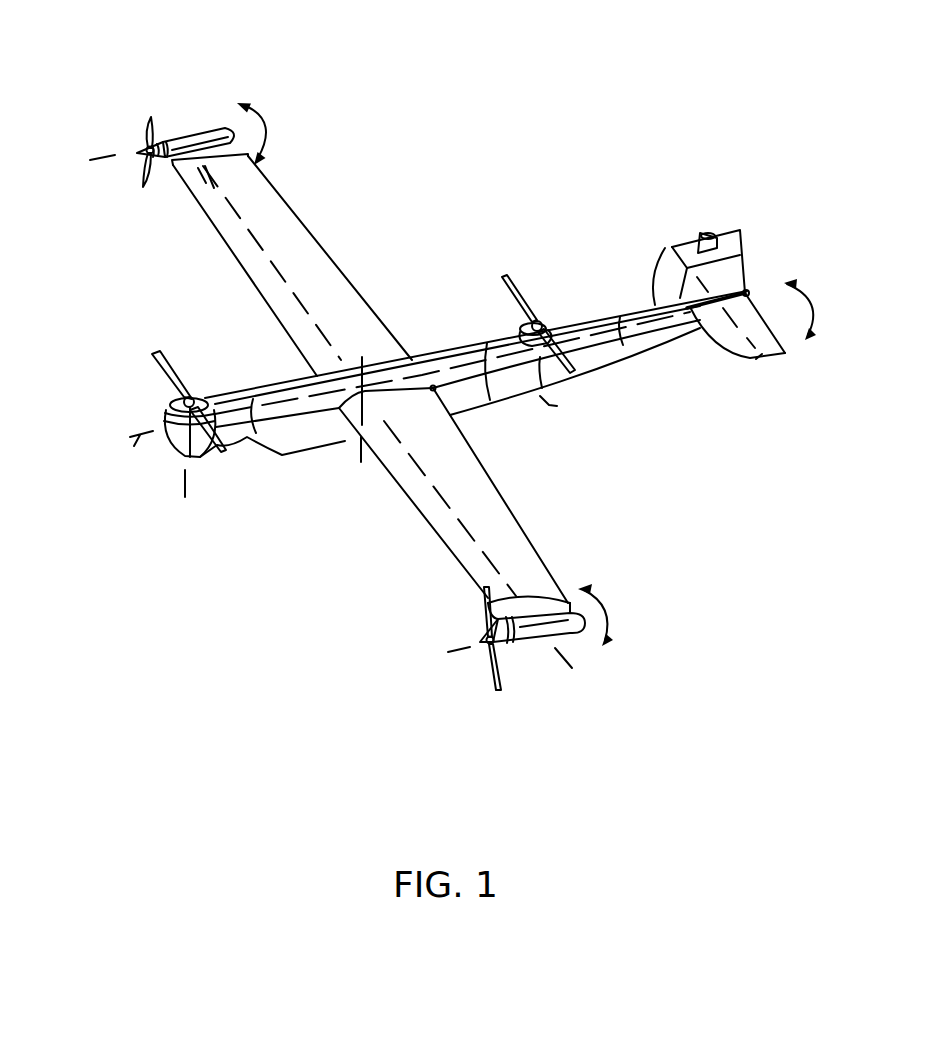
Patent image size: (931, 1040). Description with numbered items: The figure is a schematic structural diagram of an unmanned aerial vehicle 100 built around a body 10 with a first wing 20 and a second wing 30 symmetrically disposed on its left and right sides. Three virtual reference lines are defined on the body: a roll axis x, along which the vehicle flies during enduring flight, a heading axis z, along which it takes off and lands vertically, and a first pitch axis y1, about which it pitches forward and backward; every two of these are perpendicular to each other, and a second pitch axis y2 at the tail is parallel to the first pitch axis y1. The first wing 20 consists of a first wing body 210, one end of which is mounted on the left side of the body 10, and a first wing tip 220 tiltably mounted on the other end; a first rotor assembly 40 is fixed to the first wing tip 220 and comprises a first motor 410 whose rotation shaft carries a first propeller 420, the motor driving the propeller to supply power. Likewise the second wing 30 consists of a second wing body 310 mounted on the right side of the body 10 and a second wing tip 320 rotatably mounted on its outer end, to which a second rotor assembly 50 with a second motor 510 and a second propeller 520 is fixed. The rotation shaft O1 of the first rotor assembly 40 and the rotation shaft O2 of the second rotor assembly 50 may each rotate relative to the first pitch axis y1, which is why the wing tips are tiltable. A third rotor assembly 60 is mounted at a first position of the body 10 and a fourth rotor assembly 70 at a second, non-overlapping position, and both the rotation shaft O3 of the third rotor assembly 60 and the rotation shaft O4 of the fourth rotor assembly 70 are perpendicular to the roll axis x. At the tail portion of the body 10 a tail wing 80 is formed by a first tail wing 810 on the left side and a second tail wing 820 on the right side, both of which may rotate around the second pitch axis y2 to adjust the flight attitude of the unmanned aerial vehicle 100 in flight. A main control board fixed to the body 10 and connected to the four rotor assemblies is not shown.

The unmanned aerial vehicle 100 is at (443, 141).
The body 10 is at (287, 453).
The first wing 20 is at (626, 487).
The first wing body 210 is at (523, 530).
The first wing tip 220 is at (570, 600).
The second wing 30 is at (133, 218).
The second wing body 310 is at (224, 240).
The second wing tip 320 is at (172, 175).
The first rotor assembly 40 is at (565, 742).
The first motor 410 is at (510, 650).
The first propeller 420 is at (493, 670).
The second rotor assembly 50 is at (195, 53).
The second motor 510 is at (168, 143).
The second propeller 520 is at (140, 150).
The third rotor assembly 60 is at (180, 398).
The fourth rotor assembly 70 is at (527, 322).
The tail wing 80 is at (797, 212).
The first tail wing 810 is at (758, 291).
The second tail wing 820 is at (676, 246).
The rotation shaft of the first rotor assembly O1 is at (431, 647).
The rotation shaft of the second rotor assembly O2 is at (80, 159).
The rotation shaft of the third rotor assembly O3 is at (184, 497).
The rotation shaft of the fourth rotor assembly O4 is at (569, 412).
The roll axis x is at (139, 453).
The first pitch axis y1 is at (599, 687).
The second pitch axis y2 is at (760, 365).
The heading axis z is at (361, 463).